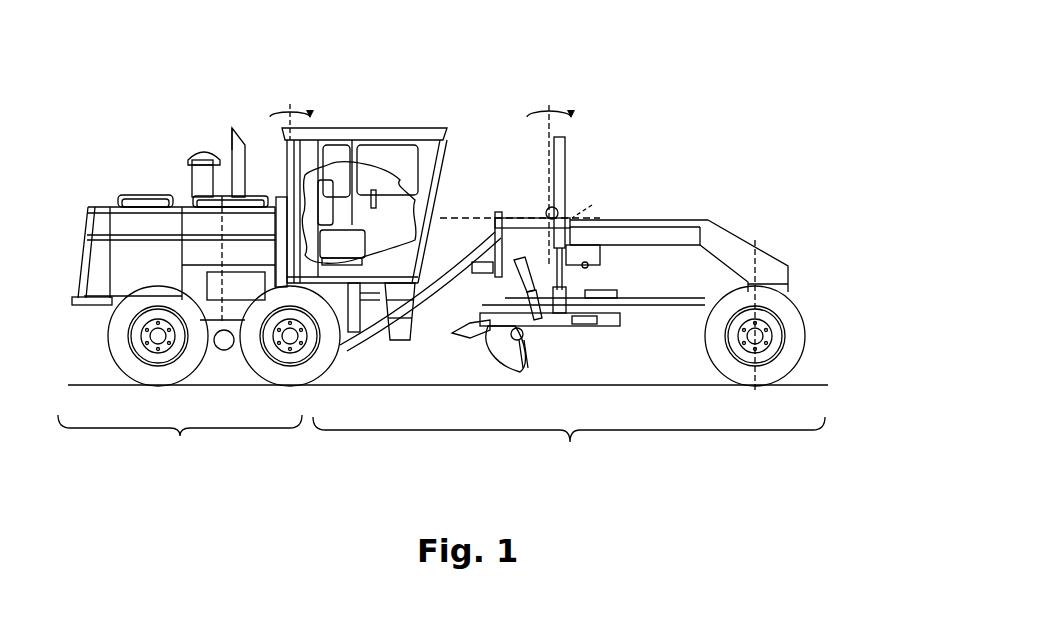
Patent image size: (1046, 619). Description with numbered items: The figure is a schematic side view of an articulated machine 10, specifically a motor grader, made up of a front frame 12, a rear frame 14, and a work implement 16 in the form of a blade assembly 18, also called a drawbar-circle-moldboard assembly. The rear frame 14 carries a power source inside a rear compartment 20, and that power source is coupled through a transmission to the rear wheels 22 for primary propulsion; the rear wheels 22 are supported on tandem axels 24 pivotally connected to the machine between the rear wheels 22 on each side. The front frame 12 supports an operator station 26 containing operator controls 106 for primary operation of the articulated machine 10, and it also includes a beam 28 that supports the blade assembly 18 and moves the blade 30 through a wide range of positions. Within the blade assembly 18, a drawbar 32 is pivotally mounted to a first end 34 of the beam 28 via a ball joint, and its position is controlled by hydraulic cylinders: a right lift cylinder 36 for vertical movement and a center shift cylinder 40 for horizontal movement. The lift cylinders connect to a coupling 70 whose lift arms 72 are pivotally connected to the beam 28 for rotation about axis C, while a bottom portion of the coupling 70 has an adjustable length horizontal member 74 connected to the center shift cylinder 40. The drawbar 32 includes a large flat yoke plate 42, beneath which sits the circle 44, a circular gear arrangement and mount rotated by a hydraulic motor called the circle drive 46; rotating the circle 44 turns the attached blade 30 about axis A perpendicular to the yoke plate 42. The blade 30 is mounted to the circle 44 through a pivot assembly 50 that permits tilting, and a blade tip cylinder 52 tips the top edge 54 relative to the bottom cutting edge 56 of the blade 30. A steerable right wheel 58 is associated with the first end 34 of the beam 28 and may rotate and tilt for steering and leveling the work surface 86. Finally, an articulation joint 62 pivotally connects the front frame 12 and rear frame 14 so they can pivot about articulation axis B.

The articulated machine 10 is at (683, 66).
The front frame 12 is at (569, 444).
The rear frame 14 is at (180, 437).
The work implement 16 is at (585, 348).
The blade assembly 18 is at (598, 342).
The rear compartment 20 is at (120, 253).
The rear wheels 22 is at (117, 335).
The tandem axels 24 is at (215, 352).
The operator station 26 is at (432, 168).
The beam 28 is at (683, 233).
The blade 30 is at (530, 358).
The drawbar 32 is at (697, 318).
The first end 34 is at (718, 290).
The right lift cylinder 36 is at (563, 172).
The center shift cylinder 40 is at (525, 278).
The yoke plate 42 is at (492, 316).
The circle 44 is at (600, 330).
The circle drive 46 is at (620, 295).
The pivot assembly 50 is at (480, 370).
The blade tip cylinder 52 is at (475, 330).
The top edge 54 is at (528, 334).
The bottom cutting edge 56 is at (540, 380).
The right wheel 58 is at (790, 325).
The articulation joint 62 is at (277, 182).
The coupling 70 is at (487, 212).
The lift arms 72 is at (524, 228).
The adjustable length horizontal member 74 is at (480, 272).
The work surface 86 is at (812, 385).
The operator controls 106 is at (378, 196).